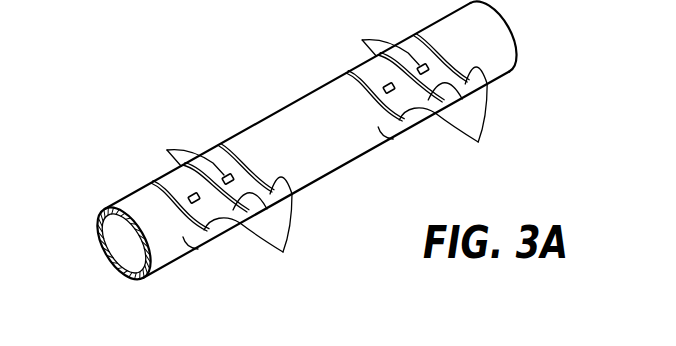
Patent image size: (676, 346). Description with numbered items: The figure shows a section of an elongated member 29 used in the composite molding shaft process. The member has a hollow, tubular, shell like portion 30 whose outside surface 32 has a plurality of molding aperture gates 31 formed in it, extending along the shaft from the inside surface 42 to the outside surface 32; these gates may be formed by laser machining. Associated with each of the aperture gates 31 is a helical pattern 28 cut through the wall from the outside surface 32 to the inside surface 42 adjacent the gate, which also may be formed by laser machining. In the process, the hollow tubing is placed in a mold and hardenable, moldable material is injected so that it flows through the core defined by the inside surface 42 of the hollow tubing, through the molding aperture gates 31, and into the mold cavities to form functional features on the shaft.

The helical pattern 28 is at (283, 254).
The elongated member 29 is at (490, 52).
The hollow tubular shell like portion 30 is at (250, 148).
The molding aperture gates 31 is at (191, 194).
The outside surface 32 is at (173, 182).
The inside surface 42 is at (123, 245).